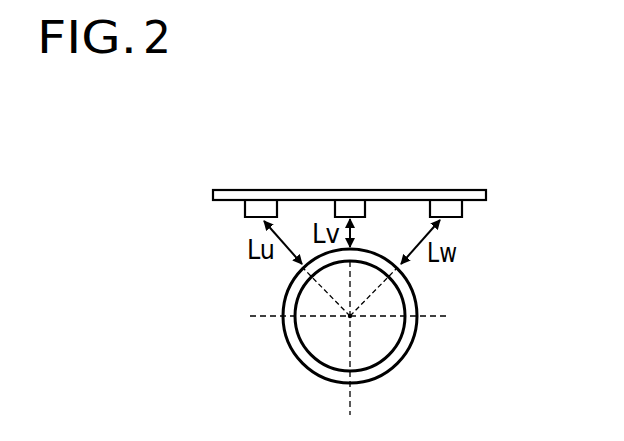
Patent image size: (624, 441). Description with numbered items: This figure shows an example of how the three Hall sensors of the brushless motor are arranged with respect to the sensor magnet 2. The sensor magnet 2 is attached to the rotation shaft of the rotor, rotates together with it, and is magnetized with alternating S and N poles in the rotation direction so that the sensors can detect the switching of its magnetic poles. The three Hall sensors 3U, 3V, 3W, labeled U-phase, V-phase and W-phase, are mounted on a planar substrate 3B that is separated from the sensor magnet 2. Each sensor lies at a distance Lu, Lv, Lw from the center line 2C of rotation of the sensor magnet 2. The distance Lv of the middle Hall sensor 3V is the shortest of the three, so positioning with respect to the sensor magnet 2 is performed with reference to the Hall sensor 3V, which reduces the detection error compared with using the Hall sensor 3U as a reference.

The planar substrate 3B is at (480, 196).
The Hall sensor 3U is at (253, 207).
The Hall sensor 3V is at (343, 207).
The Hall sensor 3W is at (440, 207).
The sensor magnet 2 is at (308, 372).
The center line 2C is at (355, 320).